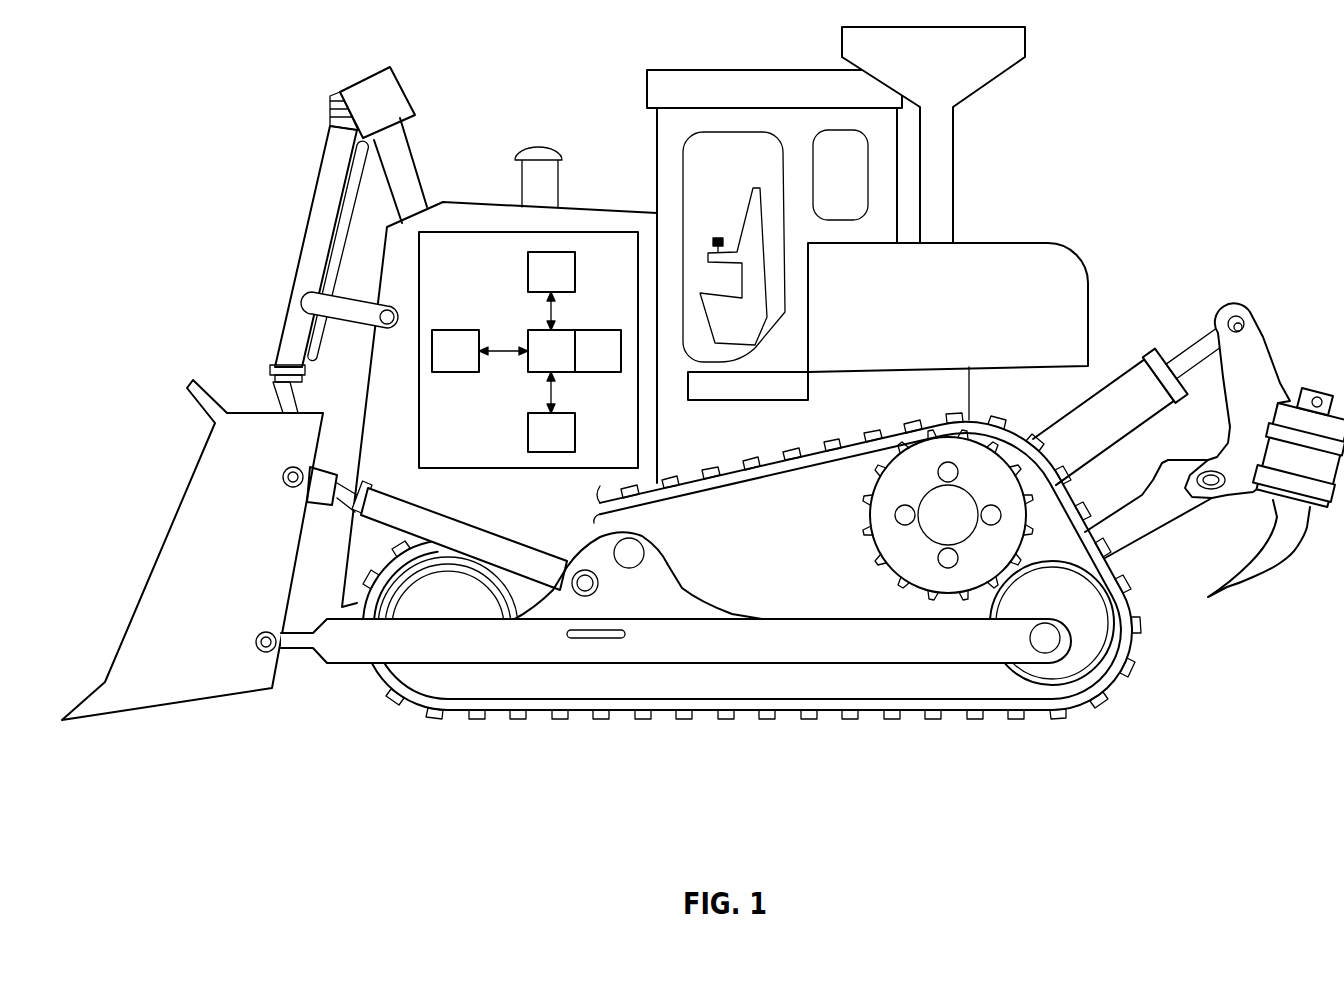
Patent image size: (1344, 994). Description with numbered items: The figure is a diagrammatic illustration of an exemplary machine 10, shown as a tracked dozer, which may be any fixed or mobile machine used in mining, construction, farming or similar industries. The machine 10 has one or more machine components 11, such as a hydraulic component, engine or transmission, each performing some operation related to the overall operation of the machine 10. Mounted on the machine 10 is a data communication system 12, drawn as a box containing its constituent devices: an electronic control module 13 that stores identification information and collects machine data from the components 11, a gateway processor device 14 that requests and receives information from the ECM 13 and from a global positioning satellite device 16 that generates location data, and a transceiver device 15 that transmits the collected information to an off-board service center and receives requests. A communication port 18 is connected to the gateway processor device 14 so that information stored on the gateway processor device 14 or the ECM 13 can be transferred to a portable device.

The machine 10 is at (703, 373).
The machine component 11 is at (512, 540).
The data communication system 12 is at (528, 313).
The electronic control module (ECM) 13 is at (563, 442).
The gateway processor device 14 is at (563, 362).
The transceiver device 15 is at (609, 362).
The global positioning satellite (GPS) device 16 is at (563, 280).
The communication port 18 is at (467, 362).